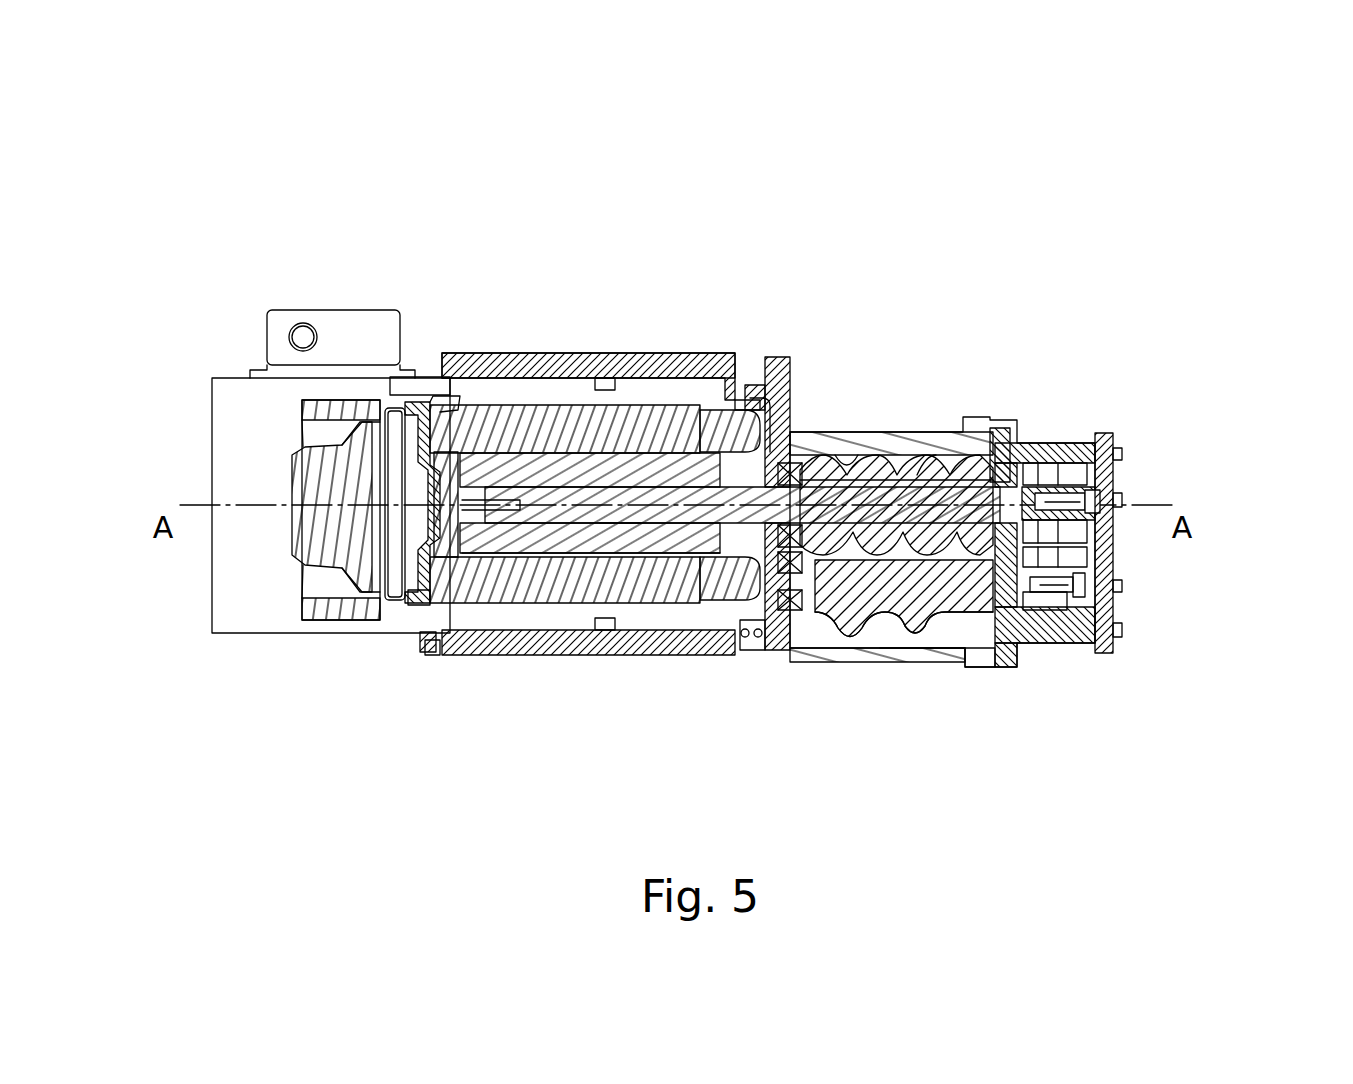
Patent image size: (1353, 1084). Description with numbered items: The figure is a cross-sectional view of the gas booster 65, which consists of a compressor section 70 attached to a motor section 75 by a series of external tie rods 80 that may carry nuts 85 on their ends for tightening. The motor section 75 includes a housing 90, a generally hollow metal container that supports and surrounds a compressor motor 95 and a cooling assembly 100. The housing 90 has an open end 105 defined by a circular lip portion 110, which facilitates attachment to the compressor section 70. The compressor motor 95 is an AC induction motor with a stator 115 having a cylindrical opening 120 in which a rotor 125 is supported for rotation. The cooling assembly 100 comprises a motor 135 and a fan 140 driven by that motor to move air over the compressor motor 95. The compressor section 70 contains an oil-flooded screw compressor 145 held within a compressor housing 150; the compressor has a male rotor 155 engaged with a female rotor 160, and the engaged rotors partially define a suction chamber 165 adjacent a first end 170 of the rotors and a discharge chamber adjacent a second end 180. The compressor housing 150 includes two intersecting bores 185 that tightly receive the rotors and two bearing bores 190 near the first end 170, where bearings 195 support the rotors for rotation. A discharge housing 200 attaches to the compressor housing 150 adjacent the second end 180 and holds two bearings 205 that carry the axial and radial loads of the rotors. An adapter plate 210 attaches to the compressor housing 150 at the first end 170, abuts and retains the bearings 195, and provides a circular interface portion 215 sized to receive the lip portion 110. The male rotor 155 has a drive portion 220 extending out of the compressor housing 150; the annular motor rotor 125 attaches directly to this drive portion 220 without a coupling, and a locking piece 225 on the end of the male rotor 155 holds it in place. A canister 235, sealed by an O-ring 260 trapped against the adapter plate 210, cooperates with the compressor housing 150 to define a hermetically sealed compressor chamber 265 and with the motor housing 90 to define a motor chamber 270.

The gas booster 65 is at (1058, 198).
The compressor section 70 is at (1018, 363).
The motor section 75 is at (612, 283).
The external tie rods 80 is at (637, 643).
The nuts 85 is at (420, 640).
The housing 90 is at (695, 365).
The compressor motor 95 is at (493, 392).
The cooling assembly 100 is at (222, 387).
The open end 105 is at (808, 432).
The lip portion 110 is at (700, 655).
The stator 115 is at (430, 652).
The cylindrical opening 120 is at (530, 610).
The rotor 125 is at (585, 540).
The motor 135 is at (303, 550).
The fan 140 is at (303, 417).
The oil-flooded screw compressor 145 is at (1025, 437).
The compressor housing 150 is at (887, 433).
The male rotor 155 is at (935, 467).
The female rotor 160 is at (975, 620).
The suction chamber 165 is at (845, 450).
The first end 170 is at (798, 612).
The second end 180 is at (1000, 662).
The intersecting bores 185 is at (995, 422).
The bearing bores 190 is at (830, 450).
The bearings 195 is at (785, 645).
The discharge housing 200 is at (1110, 435).
The bearings 205 is at (1118, 622).
The adapter plate 210 is at (768, 360).
The circular interface portion 215 is at (740, 398).
The drive portion 220 is at (617, 512).
The locking piece 225 is at (425, 605).
The canister 235 is at (405, 408).
The O-ring 260 is at (790, 400).
The compressor chamber 265 is at (517, 422).
The motor chamber 270 is at (505, 600).